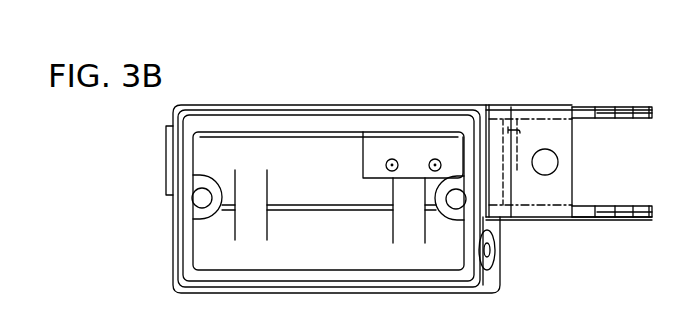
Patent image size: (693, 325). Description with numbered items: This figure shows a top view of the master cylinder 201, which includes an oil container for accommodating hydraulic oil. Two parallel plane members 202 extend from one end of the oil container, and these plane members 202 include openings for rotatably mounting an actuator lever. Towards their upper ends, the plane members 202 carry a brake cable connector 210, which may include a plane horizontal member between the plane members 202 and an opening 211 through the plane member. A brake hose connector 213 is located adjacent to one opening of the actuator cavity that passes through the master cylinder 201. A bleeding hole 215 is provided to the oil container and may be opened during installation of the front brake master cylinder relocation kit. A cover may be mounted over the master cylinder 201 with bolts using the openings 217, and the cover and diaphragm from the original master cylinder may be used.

The master cylinder 201 is at (160, 283).
The plane members 202 is at (588, 105).
The brake cable connector 210 is at (558, 130).
The opening 211 is at (553, 165).
The brake hose connector 213 is at (166, 146).
The bleeding hole 215 is at (488, 250).
The openings 217 is at (204, 196).